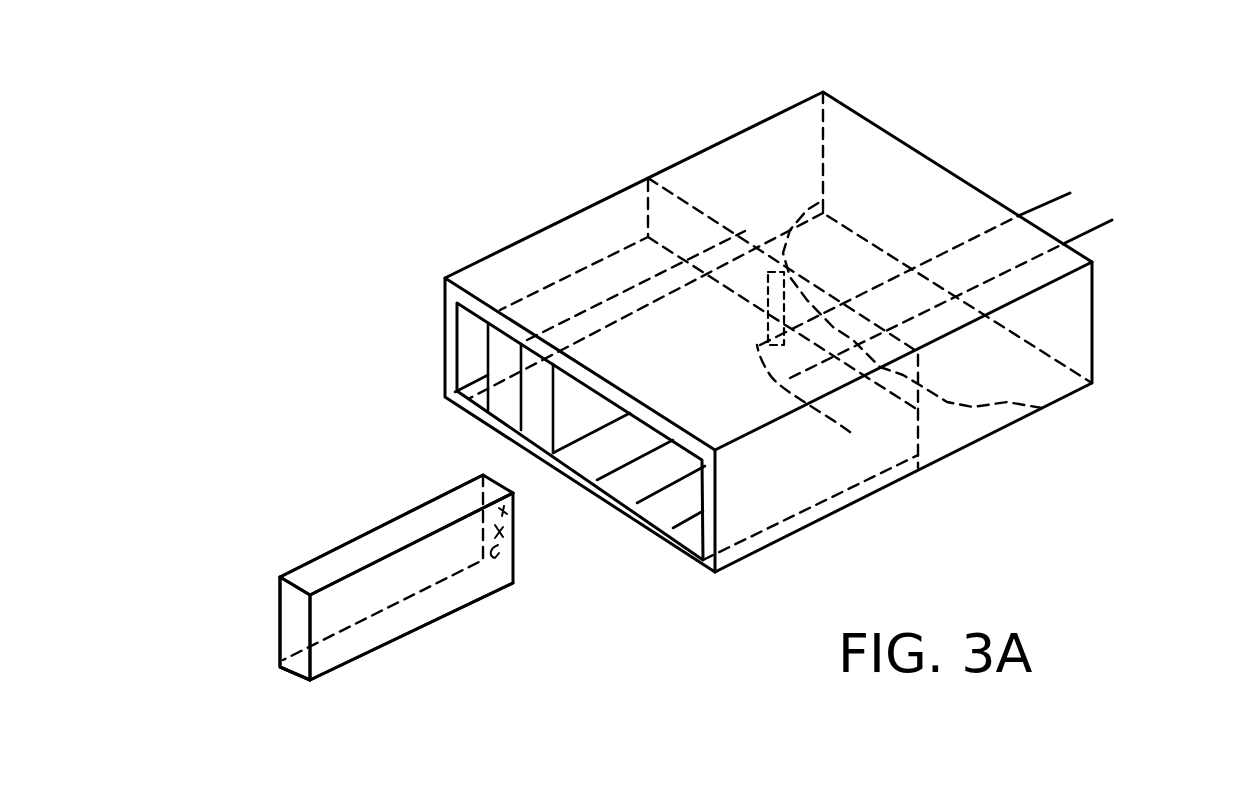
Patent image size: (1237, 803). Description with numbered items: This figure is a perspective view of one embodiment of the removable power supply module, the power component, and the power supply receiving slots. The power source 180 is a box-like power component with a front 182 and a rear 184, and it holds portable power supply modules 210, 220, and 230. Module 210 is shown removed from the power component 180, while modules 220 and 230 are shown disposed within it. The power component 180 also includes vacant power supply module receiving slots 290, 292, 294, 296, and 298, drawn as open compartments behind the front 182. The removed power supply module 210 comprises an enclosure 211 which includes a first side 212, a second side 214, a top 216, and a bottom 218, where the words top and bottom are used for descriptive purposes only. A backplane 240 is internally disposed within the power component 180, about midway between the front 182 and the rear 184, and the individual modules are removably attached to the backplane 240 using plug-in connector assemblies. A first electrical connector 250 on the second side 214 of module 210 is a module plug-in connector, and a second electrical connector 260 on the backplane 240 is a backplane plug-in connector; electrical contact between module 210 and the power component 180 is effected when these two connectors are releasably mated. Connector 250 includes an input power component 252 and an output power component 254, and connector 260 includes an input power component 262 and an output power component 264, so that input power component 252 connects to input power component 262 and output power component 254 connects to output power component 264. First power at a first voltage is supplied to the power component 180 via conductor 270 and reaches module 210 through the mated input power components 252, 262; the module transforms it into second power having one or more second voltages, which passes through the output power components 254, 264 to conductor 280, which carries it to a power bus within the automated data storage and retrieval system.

The power source 180 is at (940, 462).
The front 182 is at (690, 560).
The rear 184 is at (910, 213).
The removable power supply module 210 is at (400, 645).
The enclosure 211 is at (380, 517).
The first side 212 is at (293, 628).
The second side 214 is at (490, 470).
The top 216 is at (317, 575).
The bottom 218 is at (443, 593).
The removable power supply module 220 is at (503, 305).
The removable power supply module 230 is at (545, 368).
The backplane 240 is at (1042, 408).
The first electrical connector 250 is at (517, 525).
The input power component 252 is at (515, 512).
The output power component 254 is at (520, 557).
The second electrical connector 260 is at (753, 357).
The input power component 262 is at (826, 213).
The output power component 264 is at (935, 448).
The conductor 270 is at (1043, 207).
The conductor 280 is at (1093, 230).
The power supply module receiving slot 290 is at (475, 347).
The power supply module receiving slot 292 is at (588, 455).
The power supply module receiving slot 294 is at (625, 485).
The power supply module receiving slot 296 is at (667, 507).
The power supply module receiving slot 298 is at (692, 535).